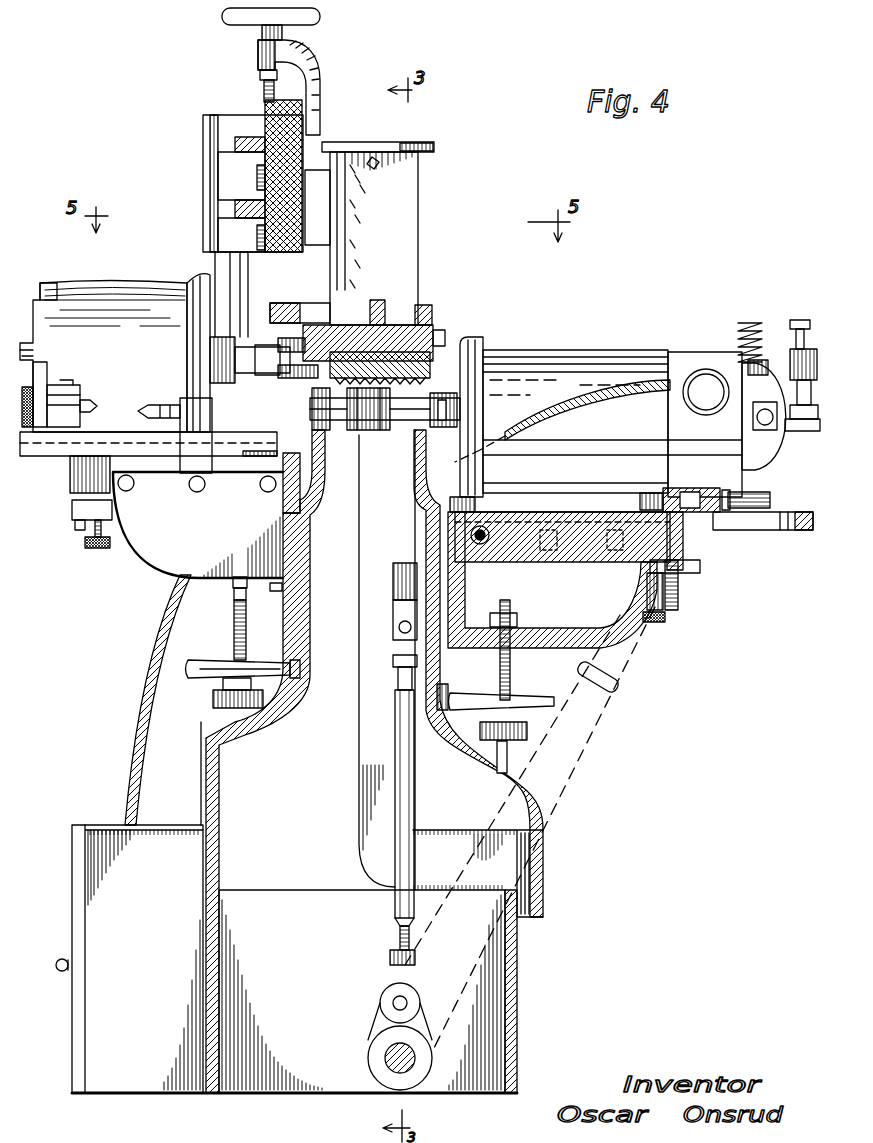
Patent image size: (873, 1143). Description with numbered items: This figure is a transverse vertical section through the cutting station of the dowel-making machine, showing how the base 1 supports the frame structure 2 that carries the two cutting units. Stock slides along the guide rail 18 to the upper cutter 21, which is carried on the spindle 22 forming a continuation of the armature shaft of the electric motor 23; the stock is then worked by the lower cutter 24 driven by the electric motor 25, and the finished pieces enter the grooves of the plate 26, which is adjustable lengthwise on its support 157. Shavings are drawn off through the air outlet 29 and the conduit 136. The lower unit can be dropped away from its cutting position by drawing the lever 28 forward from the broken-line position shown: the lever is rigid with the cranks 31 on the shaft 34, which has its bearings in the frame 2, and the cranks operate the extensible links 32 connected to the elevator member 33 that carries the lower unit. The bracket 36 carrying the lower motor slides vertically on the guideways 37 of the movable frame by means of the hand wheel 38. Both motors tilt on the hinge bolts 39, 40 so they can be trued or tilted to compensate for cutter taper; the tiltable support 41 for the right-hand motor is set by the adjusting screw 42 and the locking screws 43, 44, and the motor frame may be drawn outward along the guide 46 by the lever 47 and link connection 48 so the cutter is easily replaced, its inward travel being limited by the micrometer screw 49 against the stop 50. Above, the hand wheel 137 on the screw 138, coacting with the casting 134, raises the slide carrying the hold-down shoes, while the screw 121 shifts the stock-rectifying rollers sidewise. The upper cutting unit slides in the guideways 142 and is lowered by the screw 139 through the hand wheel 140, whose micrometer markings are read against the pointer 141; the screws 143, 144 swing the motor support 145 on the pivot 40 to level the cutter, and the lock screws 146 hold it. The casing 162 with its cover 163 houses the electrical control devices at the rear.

The base 1 is at (512, 1045).
The frame structure 2 is at (302, 700).
The guide rail 18 is at (303, 397).
The upper cutter 21 is at (283, 317).
The spindle 22 is at (247, 390).
The electric motor 23 is at (97, 302).
The lower cutter 24 is at (383, 437).
The electric motor 25 is at (557, 362).
The plate 26 is at (403, 387).
The lever 28 is at (582, 737).
The air outlet 29 is at (347, 147).
The crank 31 is at (380, 1013).
The extensible link 32 is at (405, 793).
The elevator member 33 is at (377, 557).
The shaft 34 is at (383, 1060).
The bracket 36 is at (537, 633).
The guideway 37 is at (427, 513).
The hand wheel 38 is at (485, 700).
The hinge bolt 39 is at (481, 565).
The hinge bolt 40 is at (267, 485).
The tiltable support 41 is at (528, 565).
The adjusting screw 42 is at (692, 595).
The locking screw 43 is at (665, 617).
The locking screw 44 is at (557, 562).
The guide 46 is at (473, 497).
The lever 47 is at (757, 483).
The link connection 48 is at (700, 523).
The micrometer screw 49 is at (93, 400).
The stop 50 is at (167, 405).
The screw 121 is at (307, 92).
The casting 134 is at (212, 126).
The conduit 136 is at (395, 222).
The hand wheel 137 is at (320, 18).
The screw 138 is at (258, 83).
The screw 139 is at (233, 622).
The hand wheel 140 is at (195, 677).
The pointer 141 is at (273, 667).
The guideway 142 is at (280, 588).
The screw 143 is at (75, 528).
The screw 144 is at (100, 550).
The motor support 145 is at (62, 447).
The lock screw 146 is at (138, 491).
The support 157 is at (387, 330).
The casing 162 is at (137, 959).
The cover 163 is at (75, 995).